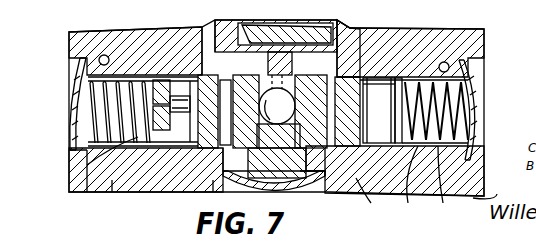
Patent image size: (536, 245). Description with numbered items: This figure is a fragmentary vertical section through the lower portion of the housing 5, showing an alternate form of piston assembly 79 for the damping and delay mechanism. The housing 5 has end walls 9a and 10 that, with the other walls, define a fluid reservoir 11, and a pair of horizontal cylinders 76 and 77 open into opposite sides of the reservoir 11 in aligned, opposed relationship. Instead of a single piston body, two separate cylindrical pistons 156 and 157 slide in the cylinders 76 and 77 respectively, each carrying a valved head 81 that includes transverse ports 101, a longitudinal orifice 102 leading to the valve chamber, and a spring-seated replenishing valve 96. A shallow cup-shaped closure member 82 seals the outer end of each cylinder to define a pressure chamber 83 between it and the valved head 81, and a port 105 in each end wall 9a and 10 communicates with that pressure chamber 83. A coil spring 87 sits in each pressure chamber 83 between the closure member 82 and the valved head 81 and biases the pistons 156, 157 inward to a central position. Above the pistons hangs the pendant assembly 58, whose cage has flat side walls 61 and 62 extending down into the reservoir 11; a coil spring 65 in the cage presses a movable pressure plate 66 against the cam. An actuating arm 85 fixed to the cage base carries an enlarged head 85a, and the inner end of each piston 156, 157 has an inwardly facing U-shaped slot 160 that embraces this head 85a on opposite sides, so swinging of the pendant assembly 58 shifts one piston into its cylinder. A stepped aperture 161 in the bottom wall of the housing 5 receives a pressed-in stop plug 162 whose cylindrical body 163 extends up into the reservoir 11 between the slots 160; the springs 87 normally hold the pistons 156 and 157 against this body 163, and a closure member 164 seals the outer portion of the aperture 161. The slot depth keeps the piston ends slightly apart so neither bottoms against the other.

The end wall 9a is at (87, 37).
The end wall 10 is at (485, 33).
The reservoir 11 is at (350, 29).
The side wall 62 is at (352, 17).
The pendant assembly 58 is at (236, 25).
The coil spring 65 is at (262, 33).
The side wall 61 is at (228, 26).
The pressure plate 66 is at (253, 80).
The actuating arm 85 is at (285, 66).
The enlarged head 85a is at (382, 83).
The U-shaped slot 160 is at (280, 111).
The transverse port 101 is at (229, 62).
The cylindrical body 163 is at (250, 146).
The closure member 164 is at (253, 192).
The stepped aperture 161 is at (311, 195).
The cylinder 76 is at (70, 196).
The piston assembly 79 is at (318, 162).
The pressure chamber 83 is at (72, 176).
The valved head 81 is at (130, 192).
The piston 156 is at (114, 194).
The stop plug 162 is at (213, 195).
The piston 157 is at (378, 197).
The cylinder 77 is at (418, 181).
The coil spring 87 is at (127, 78).
The port 105 is at (105, 55).
The closure member 82 is at (80, 90).
The replenishing valve 96 is at (186, 134).
The orifice 102 is at (358, 109).
The housing 5 is at (488, 190).